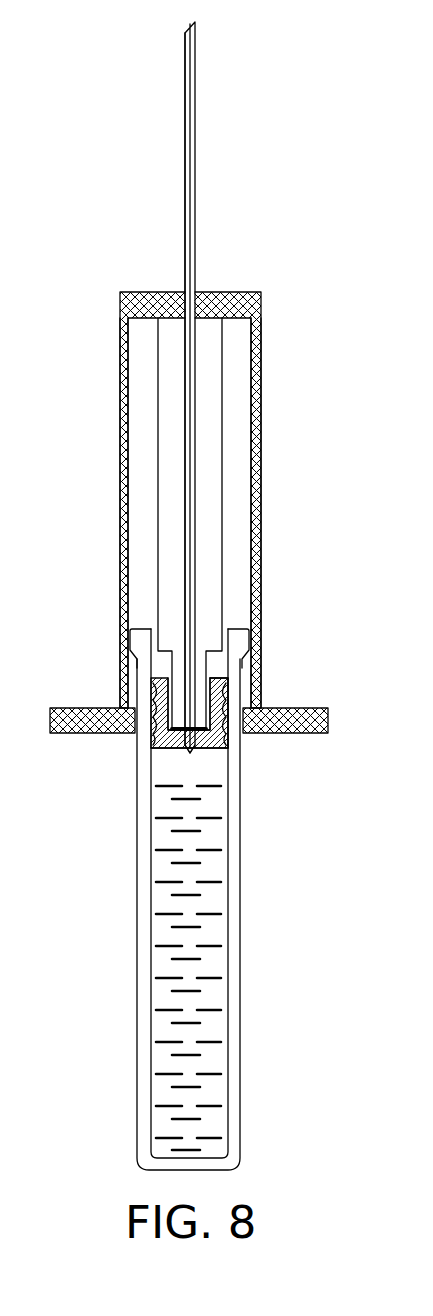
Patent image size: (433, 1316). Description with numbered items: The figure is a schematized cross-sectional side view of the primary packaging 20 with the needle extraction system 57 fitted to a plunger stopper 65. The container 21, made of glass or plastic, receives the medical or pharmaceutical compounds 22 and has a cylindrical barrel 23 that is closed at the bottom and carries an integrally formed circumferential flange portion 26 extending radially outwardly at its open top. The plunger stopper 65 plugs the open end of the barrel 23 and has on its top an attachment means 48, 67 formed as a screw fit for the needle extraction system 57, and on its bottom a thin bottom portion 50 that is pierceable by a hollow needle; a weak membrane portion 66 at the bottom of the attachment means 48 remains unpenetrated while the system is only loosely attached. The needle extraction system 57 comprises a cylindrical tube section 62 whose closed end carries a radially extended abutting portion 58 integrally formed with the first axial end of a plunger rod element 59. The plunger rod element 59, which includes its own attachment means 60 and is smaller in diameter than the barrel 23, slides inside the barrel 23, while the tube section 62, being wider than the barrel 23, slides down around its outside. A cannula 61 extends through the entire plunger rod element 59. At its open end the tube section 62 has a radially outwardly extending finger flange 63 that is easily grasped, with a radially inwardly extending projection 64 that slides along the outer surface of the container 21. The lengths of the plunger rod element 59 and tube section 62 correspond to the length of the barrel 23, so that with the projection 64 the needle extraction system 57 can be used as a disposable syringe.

The primary packaging 20 is at (102, 149).
The container 21 is at (298, 797).
The medical or pharmaceutical compounds 22 is at (207, 845).
The cylindrical barrel 23 is at (242, 820).
The flange portion 26 is at (241, 641).
The attachment means 48 is at (157, 704).
The thin bottom portion 50 is at (196, 751).
The needle extraction system 57 is at (328, 363).
The abutting portion 58 is at (140, 291).
The plunger rod element 59 is at (212, 520).
The attachment means 60 is at (176, 692).
The cannula 61 is at (196, 201).
The cylindrical tube section 62 is at (120, 496).
The finger flange 63 is at (50, 720).
The projection 64 is at (242, 733).
The plunger stopper 65 is at (152, 741).
The weak membrane portion 66 is at (227, 741).
The attachment means 67 is at (222, 686).